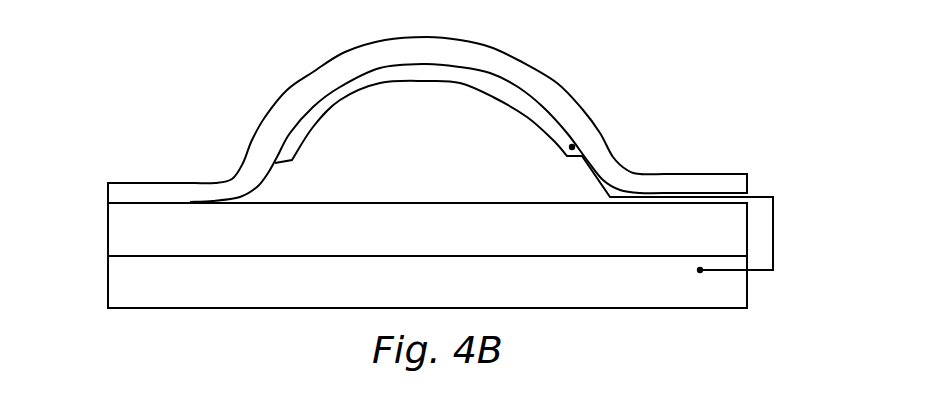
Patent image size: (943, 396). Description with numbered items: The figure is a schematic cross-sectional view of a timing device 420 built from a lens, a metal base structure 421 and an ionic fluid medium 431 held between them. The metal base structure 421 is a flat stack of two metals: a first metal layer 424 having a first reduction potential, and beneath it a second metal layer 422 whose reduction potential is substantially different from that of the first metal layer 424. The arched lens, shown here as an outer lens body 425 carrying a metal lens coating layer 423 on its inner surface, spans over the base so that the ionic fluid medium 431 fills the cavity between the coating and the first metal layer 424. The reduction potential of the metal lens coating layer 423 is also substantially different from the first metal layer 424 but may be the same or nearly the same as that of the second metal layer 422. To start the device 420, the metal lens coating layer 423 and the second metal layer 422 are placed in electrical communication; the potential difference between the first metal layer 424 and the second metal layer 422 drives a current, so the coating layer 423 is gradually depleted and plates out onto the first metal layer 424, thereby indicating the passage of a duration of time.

The timing device 420 is at (140, 52).
The metal base structure 421 is at (785, 196).
The second metal layer 422 is at (122, 282).
The metal lens coating layer 423 is at (323, 112).
The first metal layer 424 is at (122, 229).
The outer cover layer 425 is at (503, 73).
The ionic fluid medium 431 is at (448, 158).